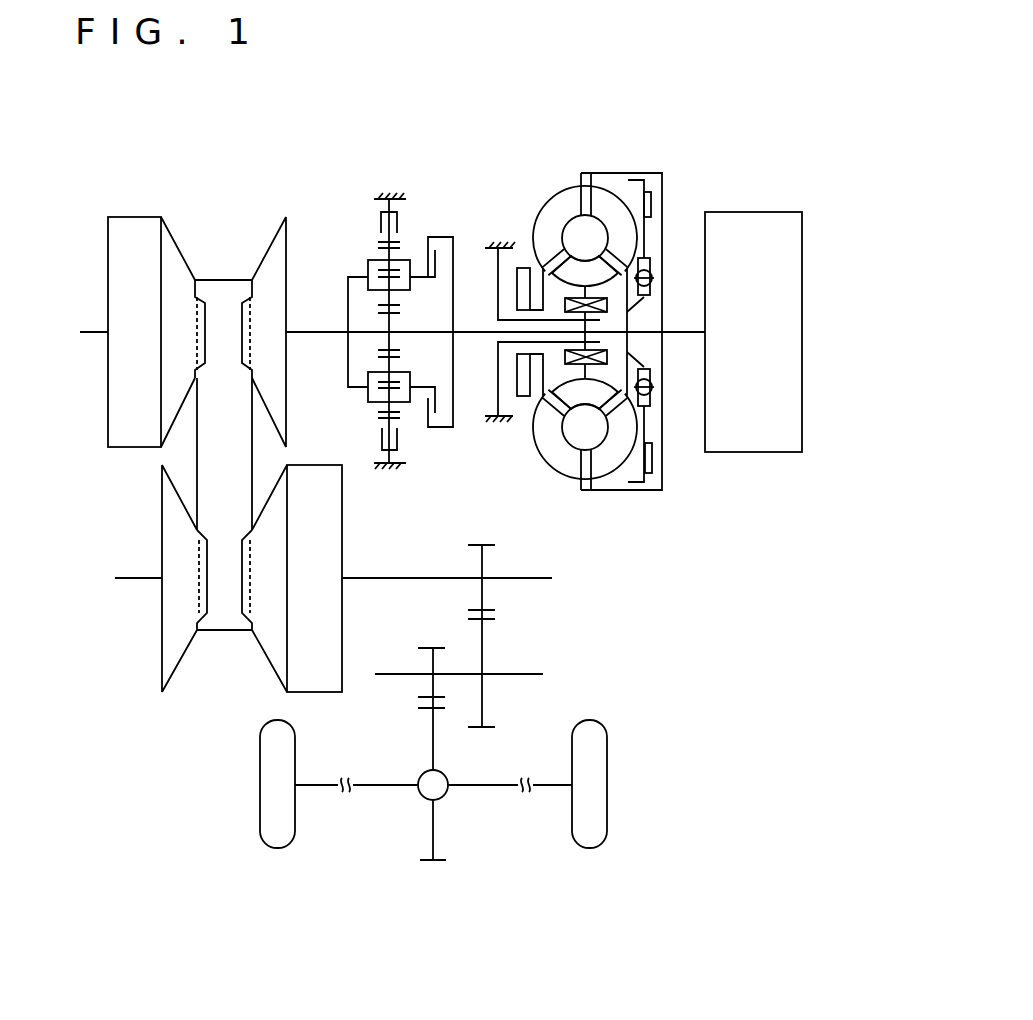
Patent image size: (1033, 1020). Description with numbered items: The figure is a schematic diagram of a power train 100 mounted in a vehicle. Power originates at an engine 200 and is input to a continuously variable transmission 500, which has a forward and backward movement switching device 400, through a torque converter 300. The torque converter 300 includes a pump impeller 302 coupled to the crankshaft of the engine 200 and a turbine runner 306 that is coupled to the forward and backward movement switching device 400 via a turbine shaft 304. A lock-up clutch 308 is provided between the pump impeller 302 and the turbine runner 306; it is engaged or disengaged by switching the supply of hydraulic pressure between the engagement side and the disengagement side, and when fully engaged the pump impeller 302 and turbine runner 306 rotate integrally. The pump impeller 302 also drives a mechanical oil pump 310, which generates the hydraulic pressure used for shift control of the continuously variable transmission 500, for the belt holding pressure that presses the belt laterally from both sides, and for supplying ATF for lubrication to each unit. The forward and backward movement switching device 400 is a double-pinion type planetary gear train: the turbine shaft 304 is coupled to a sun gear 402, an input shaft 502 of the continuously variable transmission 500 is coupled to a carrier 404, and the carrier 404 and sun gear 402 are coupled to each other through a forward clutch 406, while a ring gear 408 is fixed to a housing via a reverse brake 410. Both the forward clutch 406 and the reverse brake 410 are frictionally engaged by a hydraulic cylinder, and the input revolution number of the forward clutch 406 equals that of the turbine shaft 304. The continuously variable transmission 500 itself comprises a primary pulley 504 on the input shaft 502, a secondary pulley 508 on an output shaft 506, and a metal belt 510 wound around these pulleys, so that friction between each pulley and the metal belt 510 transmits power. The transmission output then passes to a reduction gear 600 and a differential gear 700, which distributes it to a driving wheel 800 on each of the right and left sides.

The power train 100 is at (765, 146).
The engine 200 is at (788, 280).
The torque converter 300 is at (590, 150).
The pump impeller 302 is at (558, 453).
The turbine shaft 304 is at (470, 336).
The turbine runner 306 is at (605, 462).
The lock-up clutch 308 is at (651, 200).
The mechanical oil pump 310 is at (521, 267).
The forward and backward movement switching device 400 is at (349, 188).
The sun gear 402 is at (383, 345).
The carrier 404 is at (368, 263).
The forward clutch 406 is at (443, 215).
The ring gear 408 is at (383, 423).
The reverse brake 410 is at (408, 210).
The continuously variable transmission 500 is at (218, 681).
The input shaft 502 is at (310, 328).
The primary pulley 504 is at (115, 240).
The output shaft 506 is at (395, 581).
The secondary pulley 508 is at (332, 537).
The metal belt 510 is at (222, 275).
The reduction gear 600 is at (546, 634).
The differential gear 700 is at (423, 788).
The driving wheel 800 is at (268, 808).